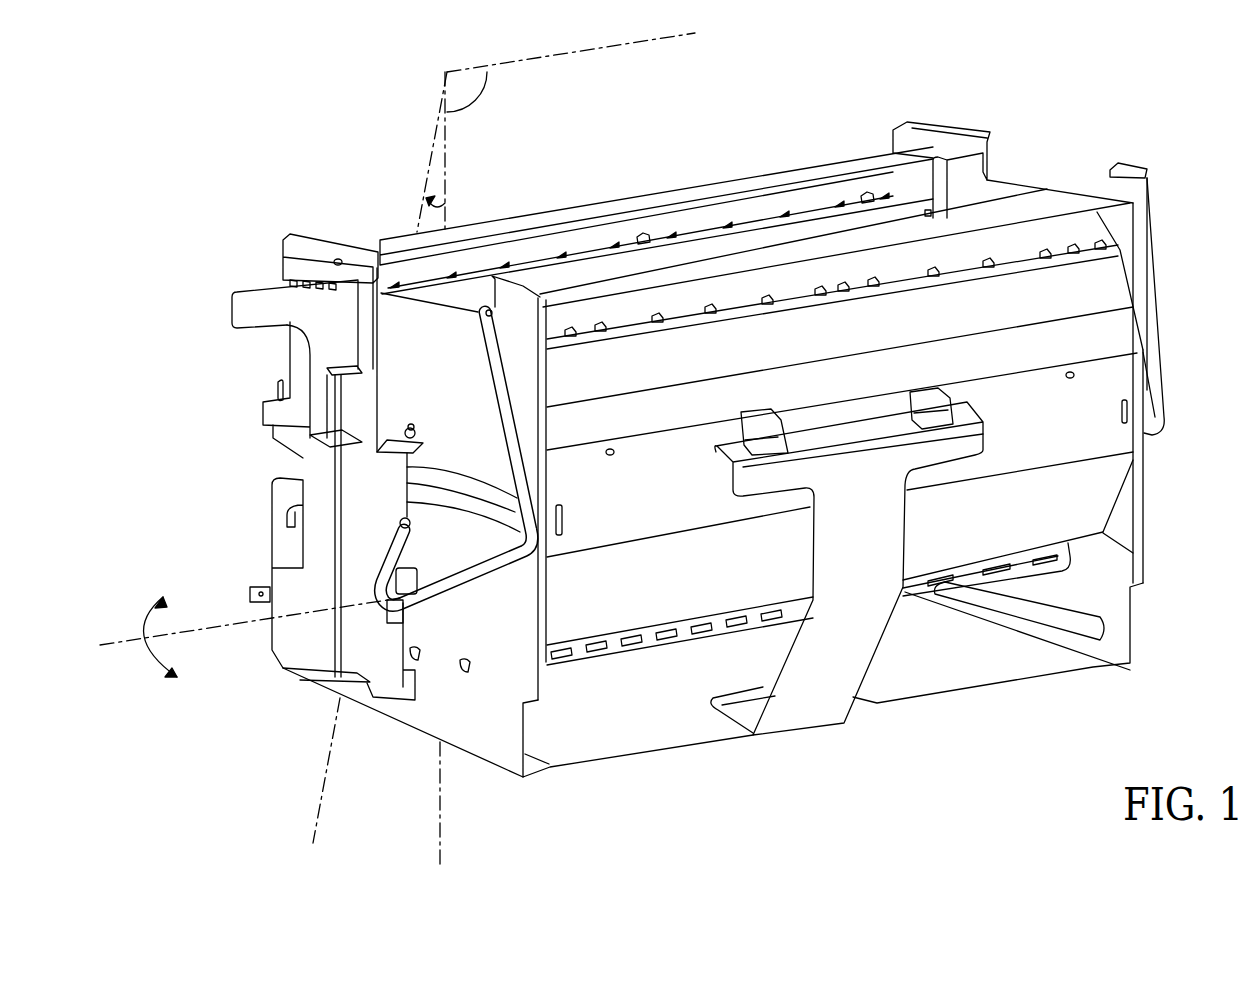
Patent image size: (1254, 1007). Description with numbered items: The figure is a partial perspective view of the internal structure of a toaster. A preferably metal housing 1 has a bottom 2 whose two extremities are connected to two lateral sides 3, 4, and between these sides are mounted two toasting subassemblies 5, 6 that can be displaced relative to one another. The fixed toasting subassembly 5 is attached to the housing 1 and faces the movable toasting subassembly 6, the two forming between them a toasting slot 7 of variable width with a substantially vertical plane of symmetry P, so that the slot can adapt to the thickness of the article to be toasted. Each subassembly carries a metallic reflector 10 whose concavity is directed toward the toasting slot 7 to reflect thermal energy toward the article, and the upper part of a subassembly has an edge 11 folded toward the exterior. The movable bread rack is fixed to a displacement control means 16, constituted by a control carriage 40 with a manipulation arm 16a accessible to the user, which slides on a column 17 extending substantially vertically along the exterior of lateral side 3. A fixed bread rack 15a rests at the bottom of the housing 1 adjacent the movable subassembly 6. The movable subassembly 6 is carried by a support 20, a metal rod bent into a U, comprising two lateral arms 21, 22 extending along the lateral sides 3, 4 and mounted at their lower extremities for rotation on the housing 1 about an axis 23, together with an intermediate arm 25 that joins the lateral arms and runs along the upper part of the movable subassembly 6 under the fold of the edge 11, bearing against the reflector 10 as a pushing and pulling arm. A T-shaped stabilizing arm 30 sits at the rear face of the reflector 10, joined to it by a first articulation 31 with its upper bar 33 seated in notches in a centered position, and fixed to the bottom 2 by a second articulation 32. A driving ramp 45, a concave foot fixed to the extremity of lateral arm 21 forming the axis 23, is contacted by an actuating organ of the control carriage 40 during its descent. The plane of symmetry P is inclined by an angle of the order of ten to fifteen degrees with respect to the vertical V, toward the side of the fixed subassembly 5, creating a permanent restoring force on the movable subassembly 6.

The housing 1 is at (1170, 220).
The bottom 2 is at (920, 685).
The lateral side 3 is at (475, 742).
The lateral side 4 is at (1100, 547).
The fixed toasting subassembly 5 is at (767, 168).
The movable toasting subassembly 6 is at (1100, 337).
The toasting slot 7 is at (957, 197).
The reflector 10 is at (1107, 440).
The edge 11 is at (1067, 203).
The fixed bread rack 15a is at (1003, 580).
The displacement control means 16 is at (253, 288).
The manipulation arm 16a is at (243, 313).
The column 17 is at (340, 462).
The support 20 is at (484, 360).
The lateral arm 21 is at (490, 557).
The lateral arm 22 is at (1168, 386).
The axis 23 is at (230, 622).
The intermediate arm 25 is at (486, 305).
The stabilizing arm 30 is at (810, 710).
The first articulation 31 is at (867, 415).
The second articulation 32 is at (743, 706).
The upper bar 33 is at (820, 433).
The control carriage 40 is at (302, 360).
The driving ramp 45 is at (400, 612).
The plane of symmetry P is at (543, 65).
The vertical V is at (330, 753).